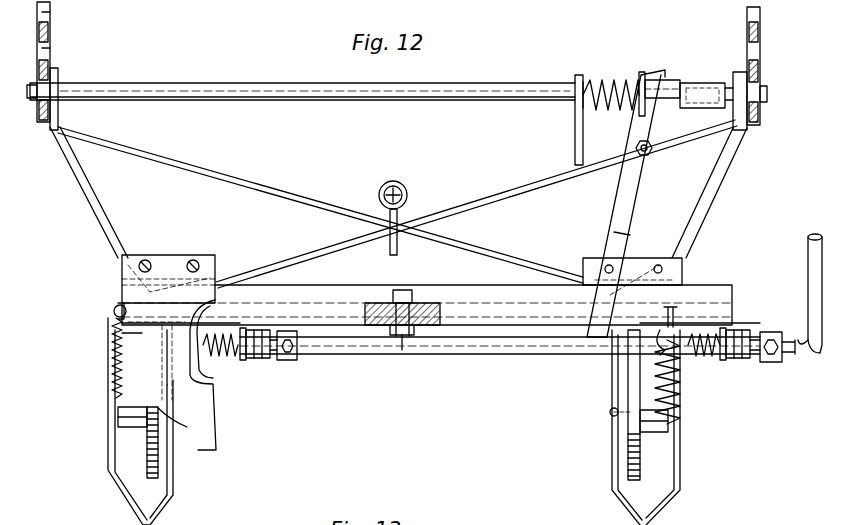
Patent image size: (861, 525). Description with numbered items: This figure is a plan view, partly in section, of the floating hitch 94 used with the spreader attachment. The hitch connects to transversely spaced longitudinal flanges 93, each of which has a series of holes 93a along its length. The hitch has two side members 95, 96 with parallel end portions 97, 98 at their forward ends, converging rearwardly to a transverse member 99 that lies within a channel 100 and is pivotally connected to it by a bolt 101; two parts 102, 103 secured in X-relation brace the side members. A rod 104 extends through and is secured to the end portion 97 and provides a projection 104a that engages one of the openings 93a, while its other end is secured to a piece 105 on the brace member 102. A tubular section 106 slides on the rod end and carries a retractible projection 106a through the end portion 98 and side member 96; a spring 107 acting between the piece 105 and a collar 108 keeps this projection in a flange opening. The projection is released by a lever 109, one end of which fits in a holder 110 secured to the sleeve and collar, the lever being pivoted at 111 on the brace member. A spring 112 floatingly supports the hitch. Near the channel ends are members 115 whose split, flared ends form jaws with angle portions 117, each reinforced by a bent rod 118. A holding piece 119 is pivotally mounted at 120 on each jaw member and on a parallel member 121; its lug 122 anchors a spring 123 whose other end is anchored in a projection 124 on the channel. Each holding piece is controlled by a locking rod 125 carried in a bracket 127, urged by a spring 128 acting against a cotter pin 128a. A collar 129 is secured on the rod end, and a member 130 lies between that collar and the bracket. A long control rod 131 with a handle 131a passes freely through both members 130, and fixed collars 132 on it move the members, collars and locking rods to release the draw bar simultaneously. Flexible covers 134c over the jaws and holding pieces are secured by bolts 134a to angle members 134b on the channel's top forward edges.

The longitudinal flange 93 is at (37, 36).
The holes 93a is at (48, 50).
The floating hitch 94 is at (100, 264).
The side member 95 is at (100, 205).
The side member 96 is at (712, 186).
The parallel end portion 97 is at (58, 76).
The parallel end portion 98 is at (733, 72).
The transverse member 99 is at (432, 303).
The channel 100 is at (340, 298).
The bolt 101 is at (402, 354).
The brace member 102 is at (508, 192).
The brace member 103 is at (295, 190).
The rod 104 is at (243, 83).
The projection 104a is at (32, 98).
The piece 105 is at (575, 128).
The tubular section 106 is at (692, 83).
The retractible projection 106a is at (767, 93).
The spring 107 is at (600, 78).
The collar 108 is at (642, 70).
The lever 109 is at (615, 196).
The holder 110 is at (655, 92).
The pivot 111 is at (655, 135).
The spring 112 is at (398, 182).
The member 115 is at (175, 468).
The angle portion 117 is at (155, 522).
The bent rod 118 is at (108, 472).
The holding piece 119 is at (158, 447).
The pivot 120 is at (610, 413).
The parallel member 121 is at (150, 405).
The lug 122 is at (118, 422).
The spring 123 is at (110, 364).
The projection 124 is at (112, 311).
The locking rod 125 is at (258, 362).
The bracket 127 is at (245, 330).
The spring 128 is at (220, 362).
The cotter pin 128a is at (190, 345).
The collar 129 is at (298, 358).
The member 130 is at (292, 362).
The control rod 131 is at (475, 356).
The handle 131a is at (808, 250).
The fixed collar 132 is at (270, 362).
The bolt 134a is at (194, 260).
The angle member 134b is at (675, 272).
The flexible cover 134c is at (120, 335).